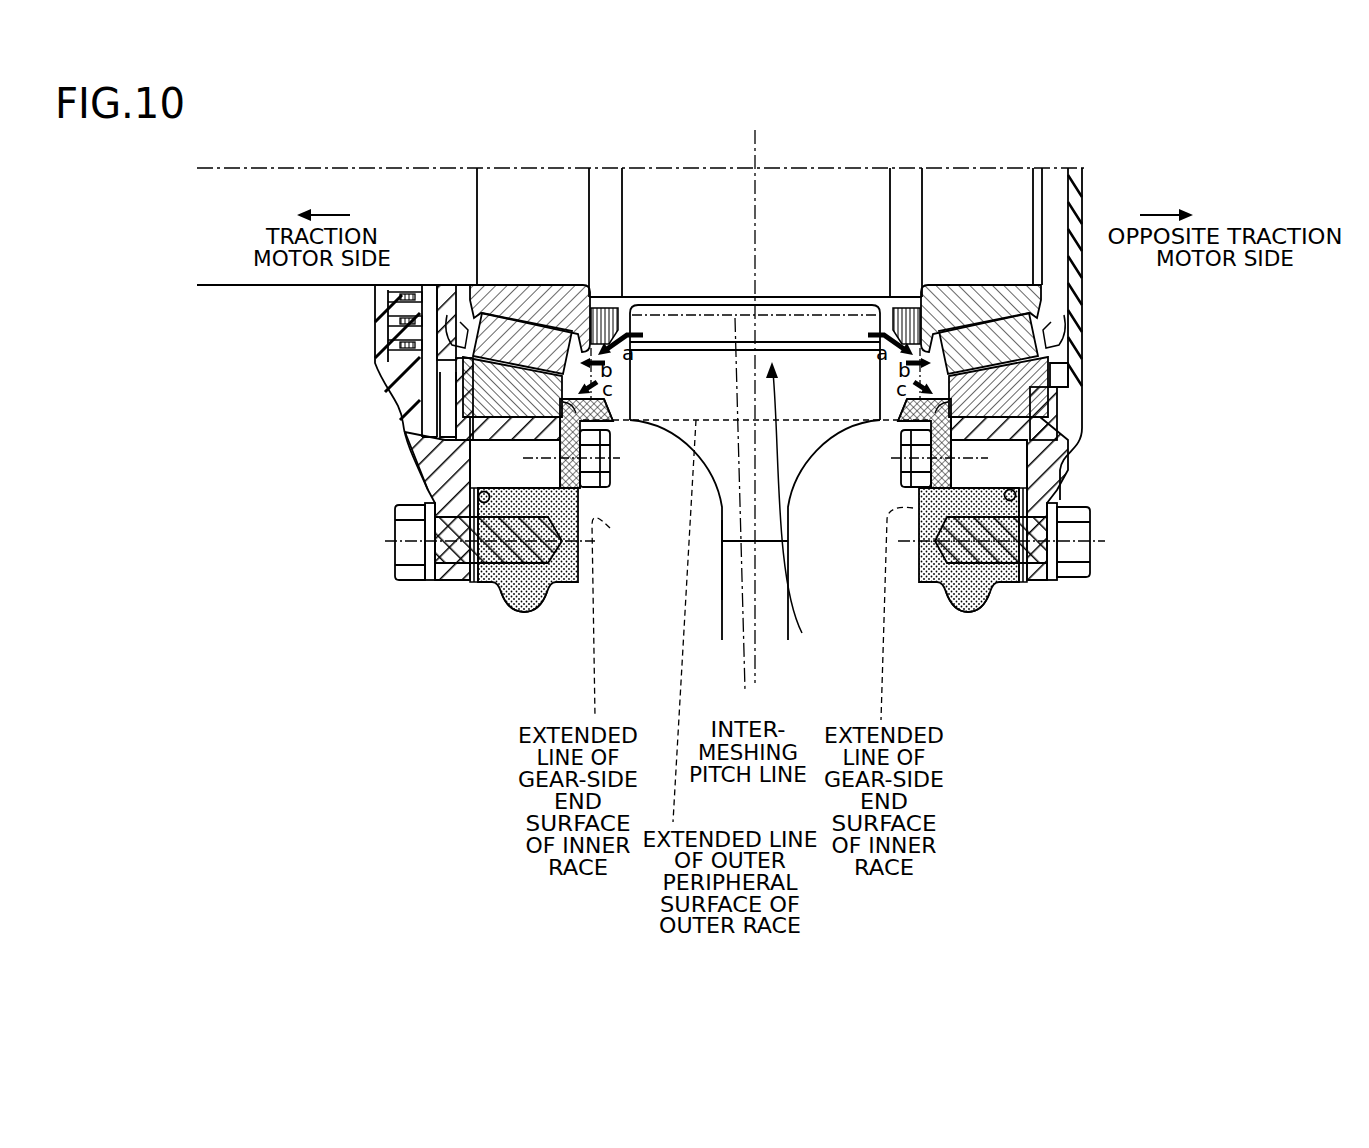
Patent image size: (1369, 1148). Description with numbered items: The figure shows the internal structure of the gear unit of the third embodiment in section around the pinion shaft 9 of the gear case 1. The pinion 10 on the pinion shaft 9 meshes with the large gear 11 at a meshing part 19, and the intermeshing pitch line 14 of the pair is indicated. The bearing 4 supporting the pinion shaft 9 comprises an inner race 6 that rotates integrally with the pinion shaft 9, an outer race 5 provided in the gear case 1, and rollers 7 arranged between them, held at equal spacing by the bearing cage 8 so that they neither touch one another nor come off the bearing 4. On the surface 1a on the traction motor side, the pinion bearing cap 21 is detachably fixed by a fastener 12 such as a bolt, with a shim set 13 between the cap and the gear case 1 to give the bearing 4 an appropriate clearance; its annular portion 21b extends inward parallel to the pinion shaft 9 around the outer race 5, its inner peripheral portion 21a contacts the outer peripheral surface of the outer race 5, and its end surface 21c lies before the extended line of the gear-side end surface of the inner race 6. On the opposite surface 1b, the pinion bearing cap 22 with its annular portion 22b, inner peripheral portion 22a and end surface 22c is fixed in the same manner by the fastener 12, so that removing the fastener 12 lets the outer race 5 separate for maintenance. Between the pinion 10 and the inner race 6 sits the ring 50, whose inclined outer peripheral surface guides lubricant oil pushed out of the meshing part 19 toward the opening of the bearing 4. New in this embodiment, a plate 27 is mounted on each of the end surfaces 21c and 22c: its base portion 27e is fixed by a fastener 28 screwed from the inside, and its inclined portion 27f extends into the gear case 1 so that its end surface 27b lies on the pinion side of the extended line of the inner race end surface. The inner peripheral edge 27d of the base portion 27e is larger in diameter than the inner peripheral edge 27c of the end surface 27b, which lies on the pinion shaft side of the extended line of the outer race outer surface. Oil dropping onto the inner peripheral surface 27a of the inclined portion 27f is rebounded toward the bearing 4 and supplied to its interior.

The gear case 1 is at (558, 598).
The surface of the gear case on the traction motor side 1a is at (518, 614).
The surface of the gear case opposite to the traction motor side 1b is at (975, 614).
The bearing 4 is at (458, 368).
The outer race 5 is at (468, 404).
The inner race 6 is at (513, 290).
The rollers 7 is at (487, 358).
The bearing cage 8 is at (465, 333).
The pinion shaft 9 is at (238, 188).
The pinion 10 is at (692, 198).
The large gear 11 is at (716, 454).
The fastener 12 is at (415, 585).
The shim set 13 is at (475, 590).
The intermeshing pitch line 14 is at (747, 517).
The meshing part 19 is at (790, 510).
The pinion bearing cap 21 is at (470, 488).
The inner peripheral portion 21a is at (540, 445).
The annular portion 21b is at (510, 462).
The end surface 21c is at (430, 545).
The pinion bearing cap 22 is at (1041, 470).
The inner peripheral portion 22a is at (971, 447).
The annular portion 22b is at (1001, 462).
The end surface 22c is at (1085, 545).
The plate 27 is at (613, 442).
The inner peripheral surface 27a is at (613, 430).
The end surface 27b is at (625, 408).
The inner peripheral edge 27c is at (632, 394).
The inner peripheral edge 27d is at (570, 440).
The base portion 27e is at (560, 470).
The inclined portion 27f is at (566, 406).
The fastener 28 is at (606, 490).
The ring 50 is at (598, 307).